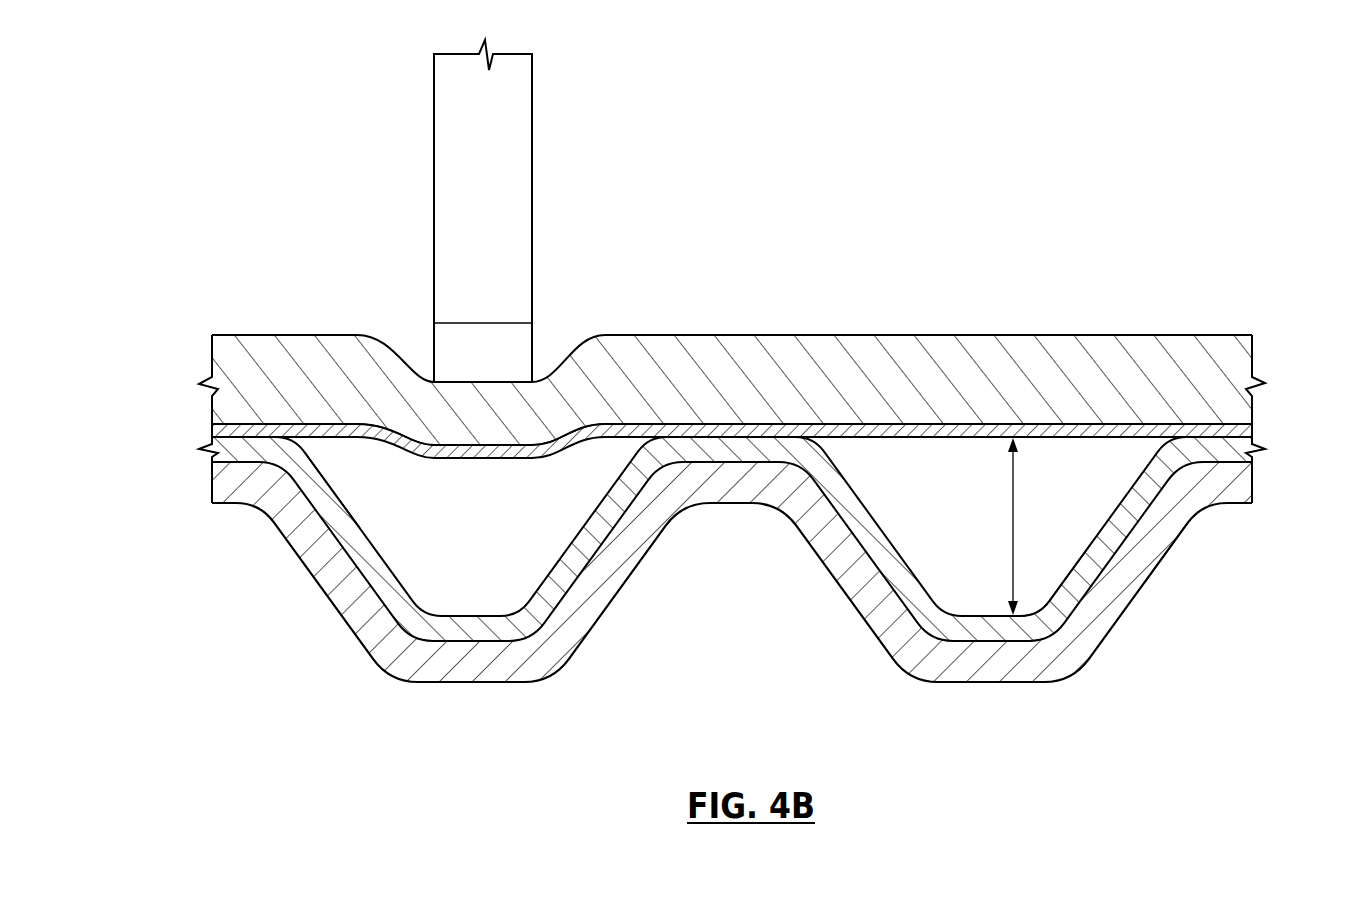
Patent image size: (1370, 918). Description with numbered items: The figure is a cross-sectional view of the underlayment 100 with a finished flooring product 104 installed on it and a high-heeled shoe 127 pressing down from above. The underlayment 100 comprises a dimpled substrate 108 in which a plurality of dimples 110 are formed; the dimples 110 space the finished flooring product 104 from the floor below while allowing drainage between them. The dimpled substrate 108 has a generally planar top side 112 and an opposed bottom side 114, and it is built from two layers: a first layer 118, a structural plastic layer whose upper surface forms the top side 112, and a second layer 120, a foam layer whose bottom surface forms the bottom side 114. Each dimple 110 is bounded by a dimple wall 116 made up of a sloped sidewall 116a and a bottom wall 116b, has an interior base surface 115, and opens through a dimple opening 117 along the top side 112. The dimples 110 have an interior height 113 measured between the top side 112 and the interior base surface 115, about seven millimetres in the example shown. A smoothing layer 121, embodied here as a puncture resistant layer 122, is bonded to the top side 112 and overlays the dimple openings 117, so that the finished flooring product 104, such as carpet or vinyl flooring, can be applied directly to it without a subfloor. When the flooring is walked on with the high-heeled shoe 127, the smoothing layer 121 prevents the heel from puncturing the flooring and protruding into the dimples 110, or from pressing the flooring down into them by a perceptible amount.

The underlayment 100 is at (1212, 582).
The finished flooring product 104 is at (1128, 380).
The dimpled substrate 108 is at (352, 543).
The dimples 110 is at (603, 613).
The top side 112 is at (697, 437).
The interior height 113 is at (1000, 503).
The bottom side 114 is at (745, 505).
The interior base surface 115 is at (1027, 612).
The dimple wall 116 is at (1100, 523).
The sidewall 116a is at (593, 551).
The bottom wall 116b is at (482, 658).
The dimple opening 117 is at (925, 426).
The first layer 118 is at (777, 452).
The second layer 120 is at (807, 482).
The smoothing layer 121 is at (297, 432).
The puncture resistant layer 122 is at (995, 430).
The high-heeled shoes 127 is at (495, 223).